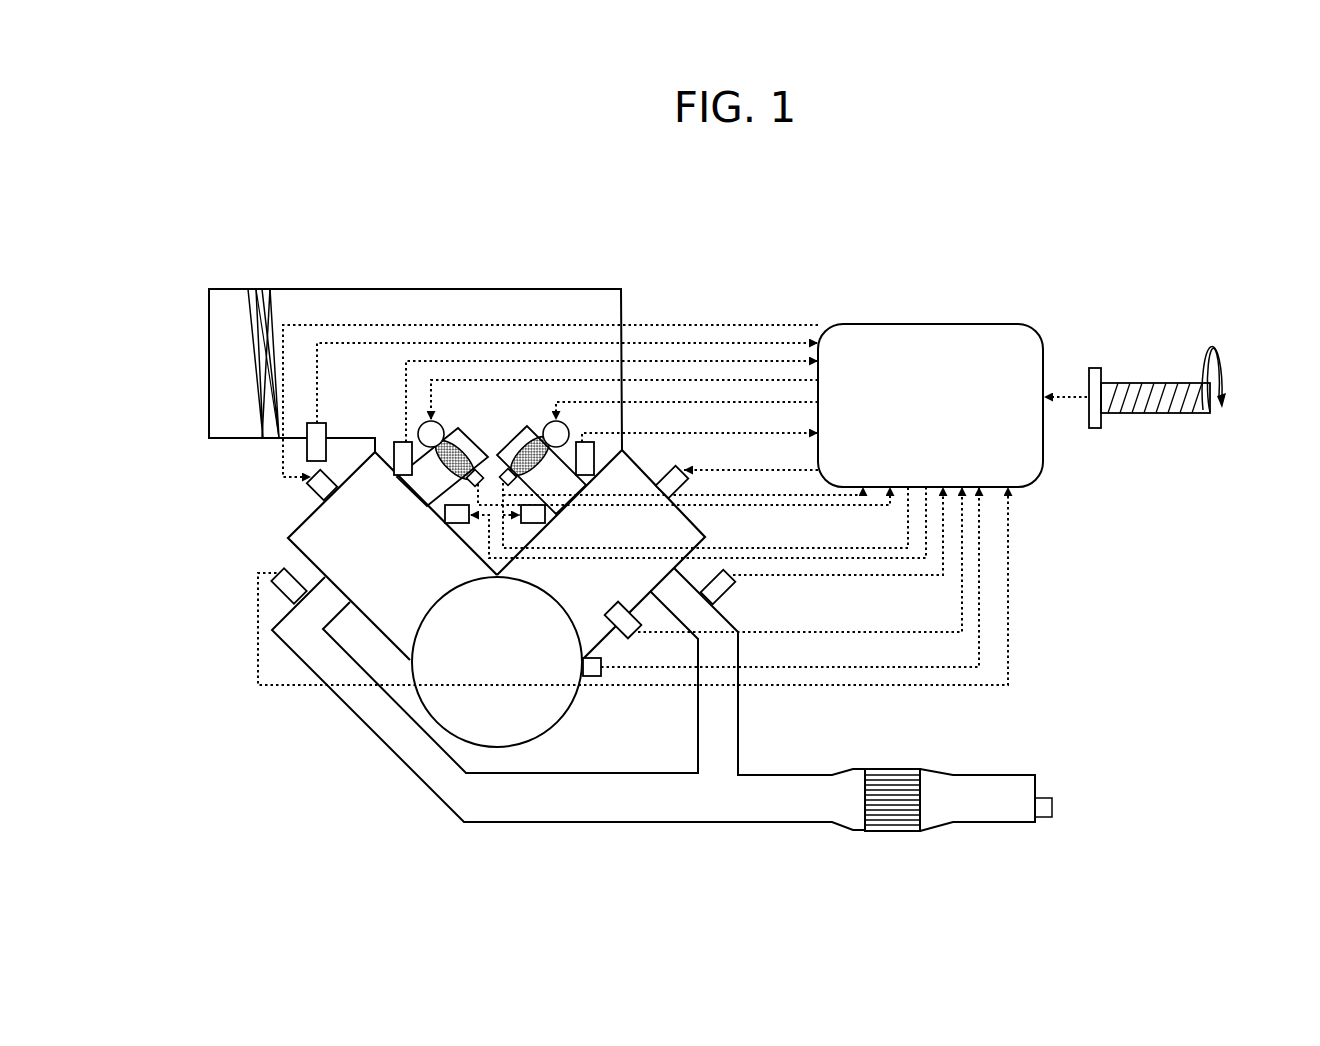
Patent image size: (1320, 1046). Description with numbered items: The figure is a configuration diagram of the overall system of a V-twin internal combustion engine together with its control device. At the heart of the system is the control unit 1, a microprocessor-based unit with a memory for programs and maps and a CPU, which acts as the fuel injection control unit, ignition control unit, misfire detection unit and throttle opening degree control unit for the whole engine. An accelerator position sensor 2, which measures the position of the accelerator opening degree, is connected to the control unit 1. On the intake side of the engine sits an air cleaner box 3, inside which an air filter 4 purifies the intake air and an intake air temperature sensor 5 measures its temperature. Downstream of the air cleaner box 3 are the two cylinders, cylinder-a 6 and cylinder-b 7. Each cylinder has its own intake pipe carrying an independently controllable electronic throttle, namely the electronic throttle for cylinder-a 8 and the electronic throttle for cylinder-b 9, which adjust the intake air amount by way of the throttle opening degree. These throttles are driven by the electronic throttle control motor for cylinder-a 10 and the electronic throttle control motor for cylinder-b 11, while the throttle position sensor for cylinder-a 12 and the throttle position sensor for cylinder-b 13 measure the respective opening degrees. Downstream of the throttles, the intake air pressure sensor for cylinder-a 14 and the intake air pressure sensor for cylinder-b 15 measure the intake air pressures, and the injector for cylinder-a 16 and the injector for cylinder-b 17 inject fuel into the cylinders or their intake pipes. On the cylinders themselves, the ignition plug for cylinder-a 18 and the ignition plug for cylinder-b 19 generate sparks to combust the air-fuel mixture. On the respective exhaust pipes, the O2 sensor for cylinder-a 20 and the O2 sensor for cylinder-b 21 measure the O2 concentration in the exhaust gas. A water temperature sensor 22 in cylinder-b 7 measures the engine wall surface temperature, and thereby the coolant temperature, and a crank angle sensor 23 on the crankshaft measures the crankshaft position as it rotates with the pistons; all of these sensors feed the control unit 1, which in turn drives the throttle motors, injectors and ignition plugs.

The control unit 1 is at (928, 324).
The accelerator position sensor 2 is at (1097, 388).
The air cleaner box 3 is at (310, 289).
The air filter 4 is at (268, 317).
The intake air temperature sensor 5 is at (318, 440).
The cylinder-a 6 is at (353, 523).
The cylinder-b 7 is at (630, 487).
The electronic throttle for cylinder-a 8 is at (453, 455).
The electronic throttle for cylinder-b 9 is at (532, 450).
The electronic throttle control motor for cylinder-a 10 is at (435, 421).
The electronic throttle control motor for cylinder-b 11 is at (554, 420).
The throttle position sensor for cylinder-a 12 is at (477, 470).
The throttle position sensor for cylinder-b 13 is at (510, 470).
The intake air pressure sensor for cylinder-a 14 is at (408, 460).
The intake air pressure sensor for cylinder-b 15 is at (587, 460).
The injector for cylinder-a 16 is at (450, 518).
The injector for cylinder-b 17 is at (535, 518).
The ignition plug for cylinder-a 18 is at (320, 483).
The ignition plug for cylinder-b 19 is at (680, 472).
The O2 sensor for cylinder-a 20 is at (285, 583).
The O2 sensor for cylinder-b 21 is at (725, 585).
The water temperature sensor 22 is at (637, 638).
The crank angle sensor 23 is at (598, 678).